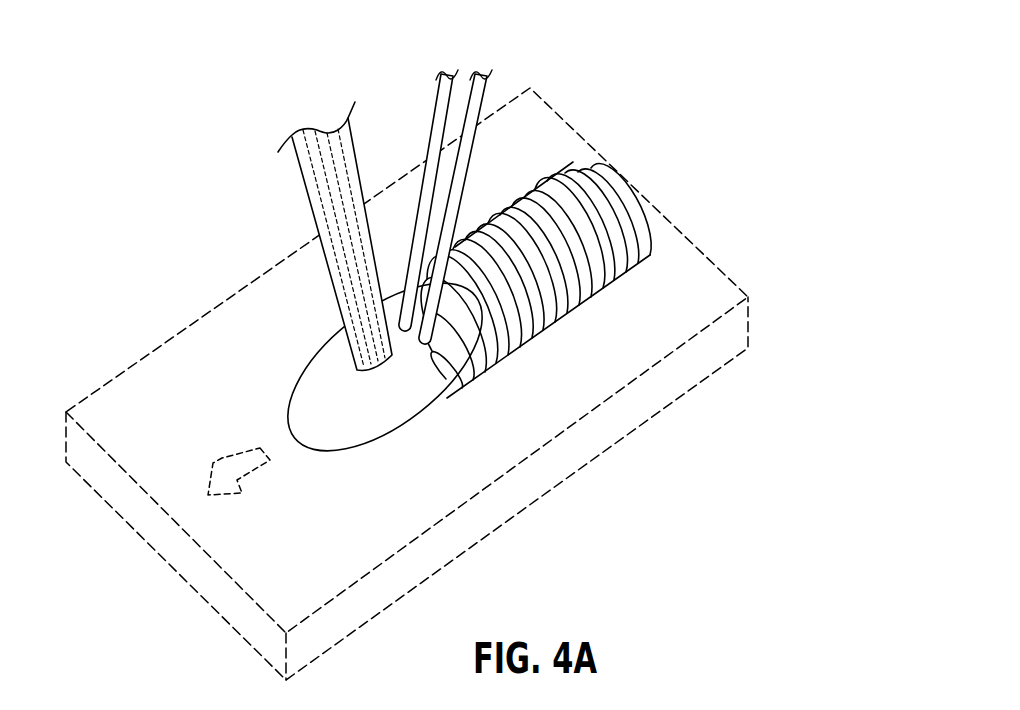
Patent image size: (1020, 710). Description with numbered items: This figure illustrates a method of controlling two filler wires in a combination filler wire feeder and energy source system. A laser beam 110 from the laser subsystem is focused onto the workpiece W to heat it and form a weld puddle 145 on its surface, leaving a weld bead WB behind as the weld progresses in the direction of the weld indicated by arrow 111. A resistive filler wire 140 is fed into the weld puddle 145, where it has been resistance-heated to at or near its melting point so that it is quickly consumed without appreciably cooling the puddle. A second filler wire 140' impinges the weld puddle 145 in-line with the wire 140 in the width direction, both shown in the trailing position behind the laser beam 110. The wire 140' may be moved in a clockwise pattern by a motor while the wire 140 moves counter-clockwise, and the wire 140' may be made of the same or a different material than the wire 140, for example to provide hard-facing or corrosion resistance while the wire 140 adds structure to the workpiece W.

The laser beam 110 is at (358, 168).
The arrow 111 is at (255, 470).
The filler wire 140 is at (503, 196).
The second filler wire 140' is at (428, 168).
The weld puddle 145 is at (323, 377).
The weld bead WB is at (610, 200).
The workpiece W is at (697, 290).